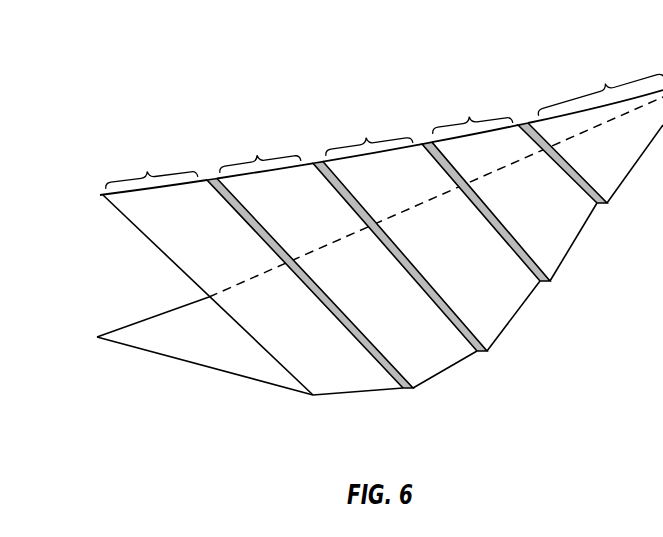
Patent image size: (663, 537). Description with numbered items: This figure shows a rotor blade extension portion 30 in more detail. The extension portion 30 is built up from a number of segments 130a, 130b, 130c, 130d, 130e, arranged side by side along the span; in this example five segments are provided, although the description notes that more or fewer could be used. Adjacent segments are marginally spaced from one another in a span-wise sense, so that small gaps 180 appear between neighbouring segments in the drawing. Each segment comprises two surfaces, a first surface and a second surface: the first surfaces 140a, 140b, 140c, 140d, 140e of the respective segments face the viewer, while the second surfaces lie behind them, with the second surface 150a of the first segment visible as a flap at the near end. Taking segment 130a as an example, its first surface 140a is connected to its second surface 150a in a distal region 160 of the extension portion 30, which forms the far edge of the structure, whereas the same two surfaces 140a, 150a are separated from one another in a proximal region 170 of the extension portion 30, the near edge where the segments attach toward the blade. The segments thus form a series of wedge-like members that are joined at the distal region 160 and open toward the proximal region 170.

The extension portion 30 is at (131, 77).
The segment 130a is at (147, 171).
The segment 130b is at (257, 155).
The segment 130c is at (366, 138).
The segment 130d is at (469, 117).
The segment 130e is at (605, 84).
The first surface 140a is at (230, 247).
The first surface 140b is at (320, 216).
The first surface 140c is at (418, 192).
The first surface 140d is at (563, 211).
The first surface 140e is at (632, 162).
The second surface 150a is at (222, 342).
The distal region 160 is at (582, 229).
The proximal region 170 is at (100, 196).
The seam joint 180 is at (485, 342).